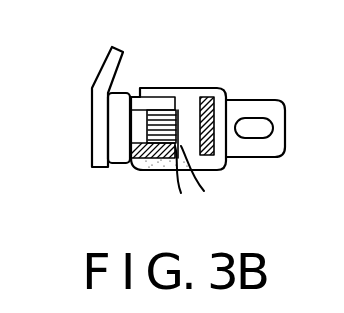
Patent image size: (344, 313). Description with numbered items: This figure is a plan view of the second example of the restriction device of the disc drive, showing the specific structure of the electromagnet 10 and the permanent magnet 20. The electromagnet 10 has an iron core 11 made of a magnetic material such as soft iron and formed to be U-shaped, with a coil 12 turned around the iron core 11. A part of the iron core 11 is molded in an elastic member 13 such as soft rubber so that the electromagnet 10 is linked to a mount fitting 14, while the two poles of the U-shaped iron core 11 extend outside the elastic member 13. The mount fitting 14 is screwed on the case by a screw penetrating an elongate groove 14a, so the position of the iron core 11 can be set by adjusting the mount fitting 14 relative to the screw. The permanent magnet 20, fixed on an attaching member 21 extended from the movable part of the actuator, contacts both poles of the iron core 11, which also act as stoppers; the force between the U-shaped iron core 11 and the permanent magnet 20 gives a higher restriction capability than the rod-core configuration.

The electromagnet 10 is at (167, 86).
The iron core 11 is at (137, 163).
The coil 12 is at (163, 162).
The elastic member 13 is at (203, 163).
The mount fitting 14 is at (229, 161).
The elongate groove 14a is at (254, 122).
The permanent magnet 20 is at (107, 131).
The attaching member 21 is at (101, 73).